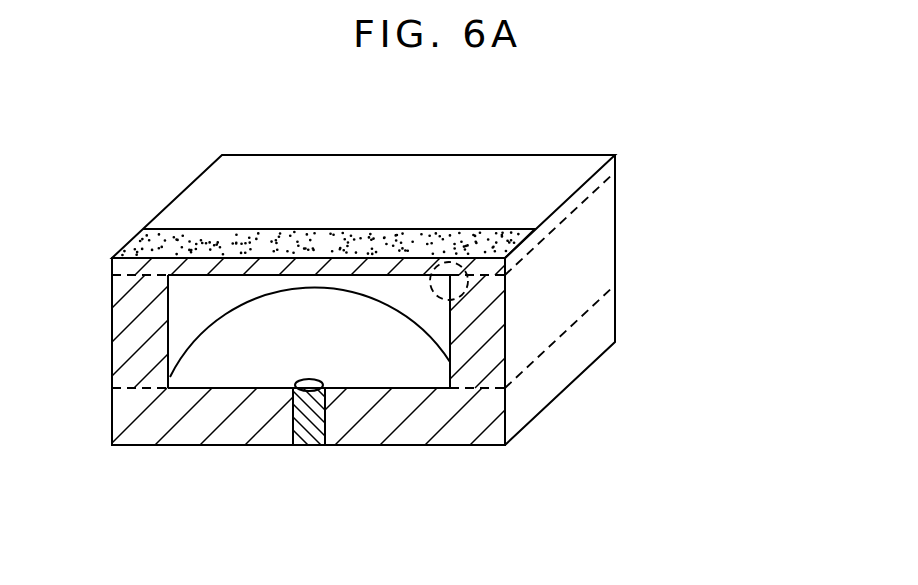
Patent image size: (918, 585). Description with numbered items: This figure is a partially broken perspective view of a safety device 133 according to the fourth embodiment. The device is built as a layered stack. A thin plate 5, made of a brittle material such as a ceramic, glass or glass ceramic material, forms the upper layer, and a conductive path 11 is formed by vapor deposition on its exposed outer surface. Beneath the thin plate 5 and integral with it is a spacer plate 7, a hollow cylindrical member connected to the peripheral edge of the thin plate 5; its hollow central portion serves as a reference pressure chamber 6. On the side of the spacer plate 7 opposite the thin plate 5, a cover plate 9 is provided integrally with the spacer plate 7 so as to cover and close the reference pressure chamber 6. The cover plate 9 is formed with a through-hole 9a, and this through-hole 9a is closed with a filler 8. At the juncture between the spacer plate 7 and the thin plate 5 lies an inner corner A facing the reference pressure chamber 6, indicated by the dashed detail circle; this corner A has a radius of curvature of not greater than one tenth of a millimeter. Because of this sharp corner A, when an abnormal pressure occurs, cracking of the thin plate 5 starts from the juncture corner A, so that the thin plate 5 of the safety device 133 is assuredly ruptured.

The safety device 133 is at (660, 143).
The conductive path 11 is at (152, 248).
The thin plate 5 is at (118, 266).
The reference pressure chamber 6 is at (188, 300).
The spacer plate 7 is at (118, 357).
The filler 8 is at (303, 425).
The cover plate 9 is at (120, 425).
The through-hole 9a is at (313, 378).
The corner A is at (455, 268).